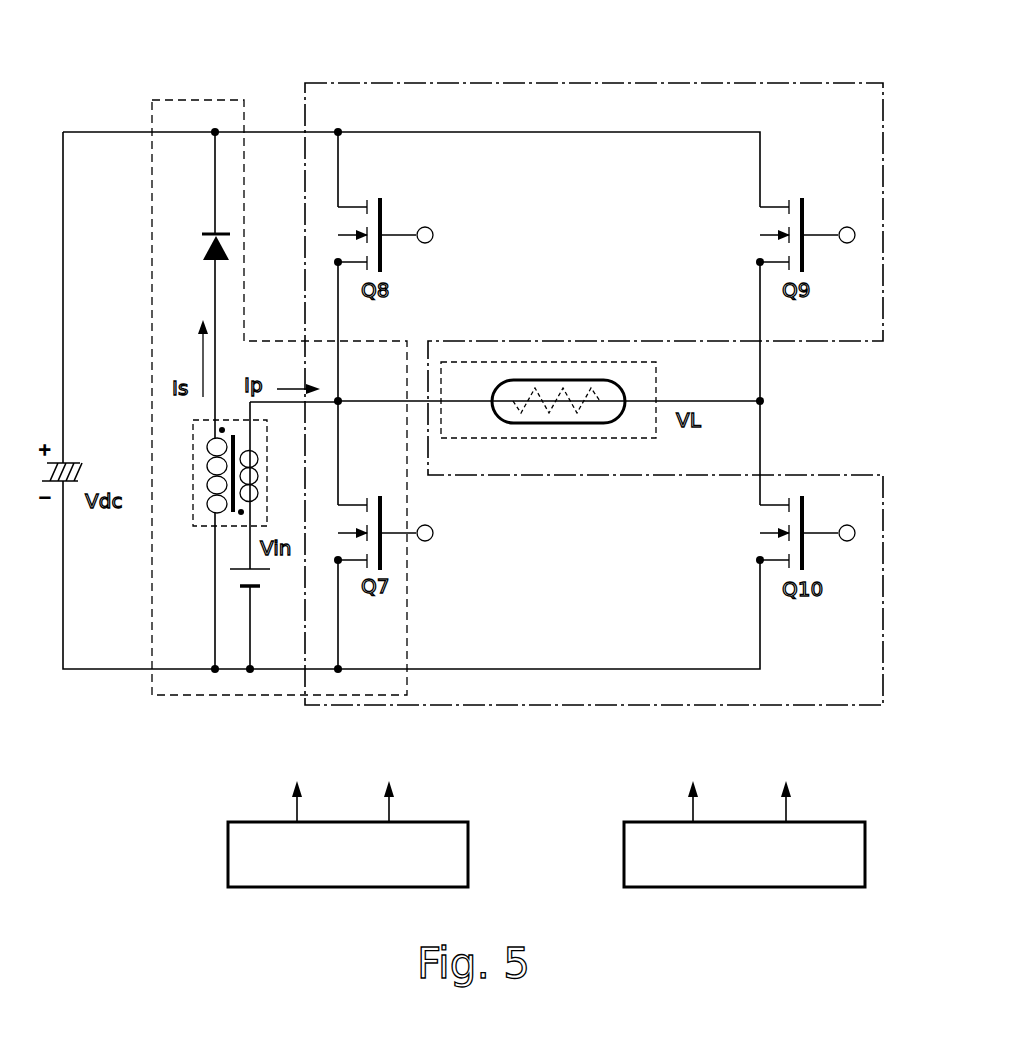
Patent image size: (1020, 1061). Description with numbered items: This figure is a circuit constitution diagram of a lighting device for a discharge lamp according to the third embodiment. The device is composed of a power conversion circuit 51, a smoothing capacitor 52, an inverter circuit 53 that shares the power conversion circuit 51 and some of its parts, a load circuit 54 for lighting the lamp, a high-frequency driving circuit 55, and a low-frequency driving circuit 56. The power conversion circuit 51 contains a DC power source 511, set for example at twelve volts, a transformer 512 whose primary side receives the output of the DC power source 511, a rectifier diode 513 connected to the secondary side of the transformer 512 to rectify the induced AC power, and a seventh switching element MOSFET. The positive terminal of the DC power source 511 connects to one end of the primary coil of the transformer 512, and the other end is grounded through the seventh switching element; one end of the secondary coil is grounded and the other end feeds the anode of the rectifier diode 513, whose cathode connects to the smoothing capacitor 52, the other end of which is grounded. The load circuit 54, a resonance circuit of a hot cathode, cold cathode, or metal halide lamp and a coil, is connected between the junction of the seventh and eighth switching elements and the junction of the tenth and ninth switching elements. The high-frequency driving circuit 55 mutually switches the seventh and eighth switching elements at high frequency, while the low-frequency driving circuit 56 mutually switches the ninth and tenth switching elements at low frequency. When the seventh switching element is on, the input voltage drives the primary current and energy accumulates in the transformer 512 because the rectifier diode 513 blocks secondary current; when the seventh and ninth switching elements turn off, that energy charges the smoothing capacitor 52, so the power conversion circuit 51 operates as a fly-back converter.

The power conversion circuit 51 is at (212, 98).
The DC power source 511 is at (268, 579).
The transformer 512 is at (193, 512).
The rectifier diode 513 is at (193, 245).
The smoothing capacitor 52 is at (68, 462).
The inverter circuit 53 is at (466, 82).
The load circuit 54 is at (645, 383).
The high-frequency driving circuit 55 is at (450, 822).
The low-frequency driving circuit 56 is at (847, 822).